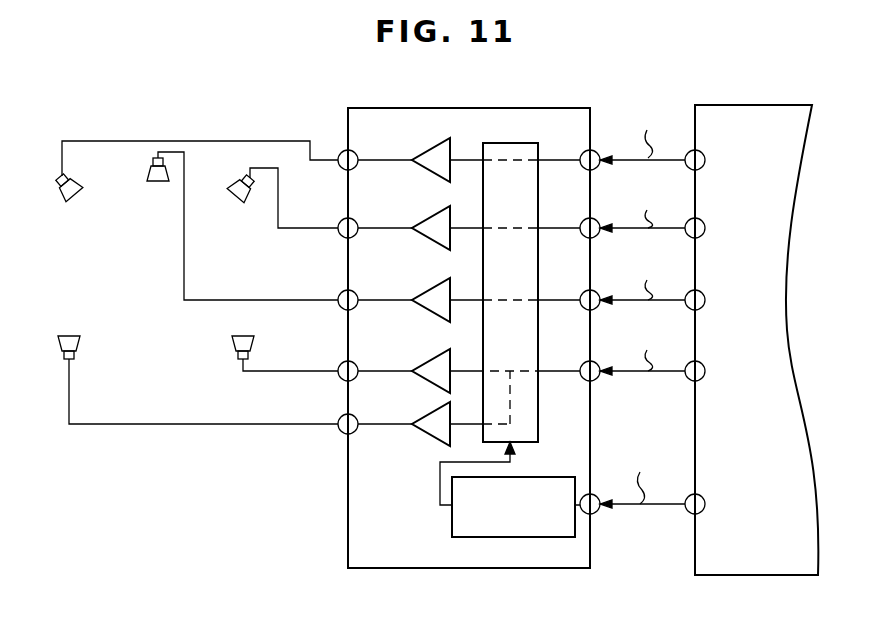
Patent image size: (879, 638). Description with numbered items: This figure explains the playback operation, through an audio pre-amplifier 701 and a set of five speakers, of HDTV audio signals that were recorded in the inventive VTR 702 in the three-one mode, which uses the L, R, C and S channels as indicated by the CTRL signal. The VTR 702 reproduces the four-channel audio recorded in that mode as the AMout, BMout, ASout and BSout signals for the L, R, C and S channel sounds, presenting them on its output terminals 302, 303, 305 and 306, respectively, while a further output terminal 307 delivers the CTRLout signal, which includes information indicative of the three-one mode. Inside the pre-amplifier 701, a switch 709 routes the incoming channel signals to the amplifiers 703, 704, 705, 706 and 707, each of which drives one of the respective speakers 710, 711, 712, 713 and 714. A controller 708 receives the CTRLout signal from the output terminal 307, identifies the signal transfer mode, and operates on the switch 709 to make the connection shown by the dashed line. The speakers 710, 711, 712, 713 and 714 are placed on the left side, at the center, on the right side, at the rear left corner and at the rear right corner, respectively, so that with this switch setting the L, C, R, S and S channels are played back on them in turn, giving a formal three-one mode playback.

The output terminal 302 is at (706, 158).
The output terminal 303 is at (706, 228).
The output terminal 305 is at (706, 300).
The output terminal 306 is at (706, 371).
The output terminal 307 is at (706, 504).
The pre-amplifier 701 is at (372, 568).
The VTR 702 is at (818, 575).
The amplifier 703 is at (424, 152).
The amplifier 704 is at (424, 220).
The amplifier 705 is at (426, 292).
The amplifier 706 is at (430, 362).
The amplifier 707 is at (434, 414).
The controller 708 is at (452, 528).
The switch 709 is at (513, 143).
The speaker 710 is at (80, 196).
The speaker 711 is at (152, 168).
The speaker 712 is at (232, 186).
The speaker 713 is at (82, 340).
The speaker 714 is at (230, 346).